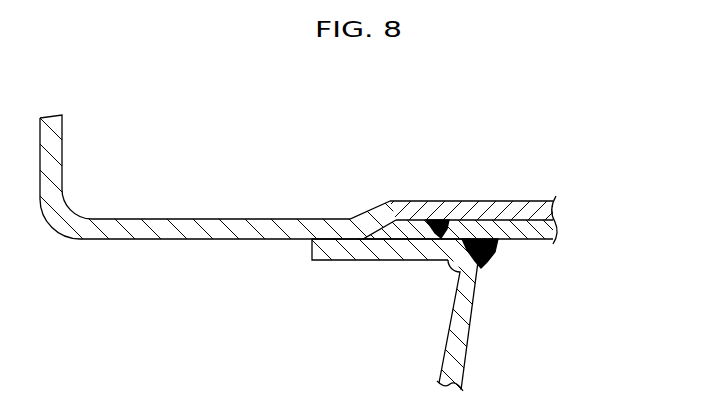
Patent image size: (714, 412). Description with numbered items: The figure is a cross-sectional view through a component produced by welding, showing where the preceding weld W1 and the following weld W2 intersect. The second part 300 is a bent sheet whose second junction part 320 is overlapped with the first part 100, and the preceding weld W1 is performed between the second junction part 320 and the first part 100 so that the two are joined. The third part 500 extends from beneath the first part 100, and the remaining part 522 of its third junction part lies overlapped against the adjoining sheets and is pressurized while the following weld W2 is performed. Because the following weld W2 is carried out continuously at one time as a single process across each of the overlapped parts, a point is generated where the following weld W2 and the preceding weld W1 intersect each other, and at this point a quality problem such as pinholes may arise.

The second part 300 is at (172, 218).
The second junction part 320 is at (503, 201).
The first part 100 is at (553, 232).
The remaining part of the third junction part 522 is at (338, 260).
The third part 500 is at (470, 346).
The preceding weld W1 is at (440, 222).
The following weld W2 is at (493, 253).